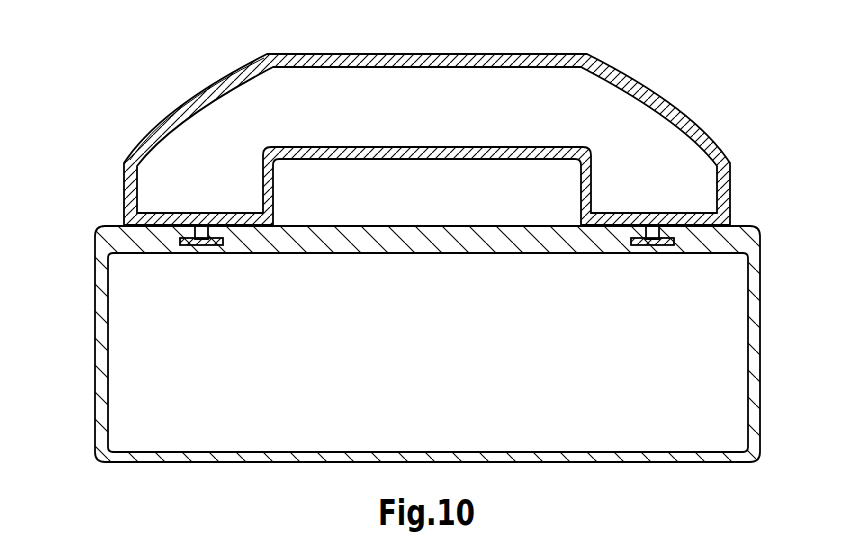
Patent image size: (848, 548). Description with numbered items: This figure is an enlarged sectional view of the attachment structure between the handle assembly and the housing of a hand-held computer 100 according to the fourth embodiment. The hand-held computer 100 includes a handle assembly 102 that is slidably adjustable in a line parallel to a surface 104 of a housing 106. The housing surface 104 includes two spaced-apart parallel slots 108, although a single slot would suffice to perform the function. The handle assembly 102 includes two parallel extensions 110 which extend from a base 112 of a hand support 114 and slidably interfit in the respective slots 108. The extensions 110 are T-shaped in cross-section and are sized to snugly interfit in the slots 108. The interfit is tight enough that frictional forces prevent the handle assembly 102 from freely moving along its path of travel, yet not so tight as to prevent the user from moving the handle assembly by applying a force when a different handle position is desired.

The hand-held computer 100 is at (156, 73).
The handle assembly 102 is at (370, 62).
The housing surface 104 is at (120, 227).
The housing 106 is at (128, 458).
The slot 108 is at (183, 246).
The extension 110 is at (205, 246).
The base 112 is at (698, 228).
The hand support 114 is at (724, 183).